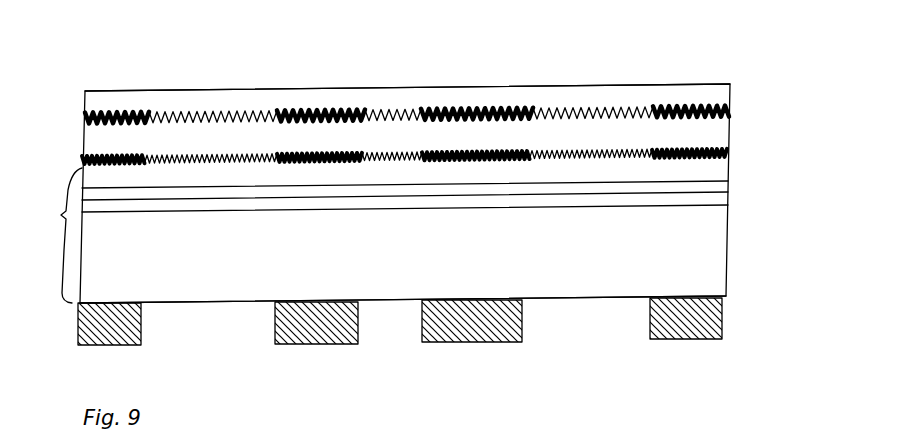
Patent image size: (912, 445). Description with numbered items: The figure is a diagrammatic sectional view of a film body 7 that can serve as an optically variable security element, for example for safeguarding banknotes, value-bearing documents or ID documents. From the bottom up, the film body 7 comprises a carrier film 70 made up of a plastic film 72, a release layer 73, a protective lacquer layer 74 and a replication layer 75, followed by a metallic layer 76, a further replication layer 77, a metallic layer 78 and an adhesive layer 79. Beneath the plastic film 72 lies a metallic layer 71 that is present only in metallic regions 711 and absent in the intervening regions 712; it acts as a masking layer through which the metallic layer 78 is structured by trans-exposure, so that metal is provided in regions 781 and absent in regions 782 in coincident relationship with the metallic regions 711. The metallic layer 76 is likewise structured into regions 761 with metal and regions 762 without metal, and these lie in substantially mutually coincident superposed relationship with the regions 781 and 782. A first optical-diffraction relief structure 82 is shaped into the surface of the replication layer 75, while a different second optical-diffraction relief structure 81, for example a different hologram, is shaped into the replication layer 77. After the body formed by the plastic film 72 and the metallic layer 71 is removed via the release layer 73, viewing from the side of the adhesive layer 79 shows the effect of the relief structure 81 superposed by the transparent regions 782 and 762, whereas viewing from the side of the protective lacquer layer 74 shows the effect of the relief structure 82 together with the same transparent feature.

The film body 7 is at (746, 67).
The carrier film 70 is at (51, 235).
The metallic layer 71 is at (722, 320).
The metallic regions 711 is at (108, 346).
The regions of the metallic layer without metal 712 is at (204, 338).
The plastic film 72 is at (727, 258).
The release layer 73 is at (725, 205).
The protective lacquer layer 74 is at (725, 184).
The replication layer 75 is at (728, 167).
The metallic layer 76 is at (735, 150).
The regions with metal 761 is at (111, 165).
The regions without metal 762 is at (207, 165).
The replication layer 77 is at (730, 128).
The metallic layer 78 is at (730, 108).
The regions with metal 781 is at (115, 125).
The regions without metal 782 is at (213, 125).
The adhesive layer 79 is at (702, 89).
The second optical-diffraction relief structure 81 is at (276, 103).
The first optical-diffraction relief structure 82 is at (249, 150).